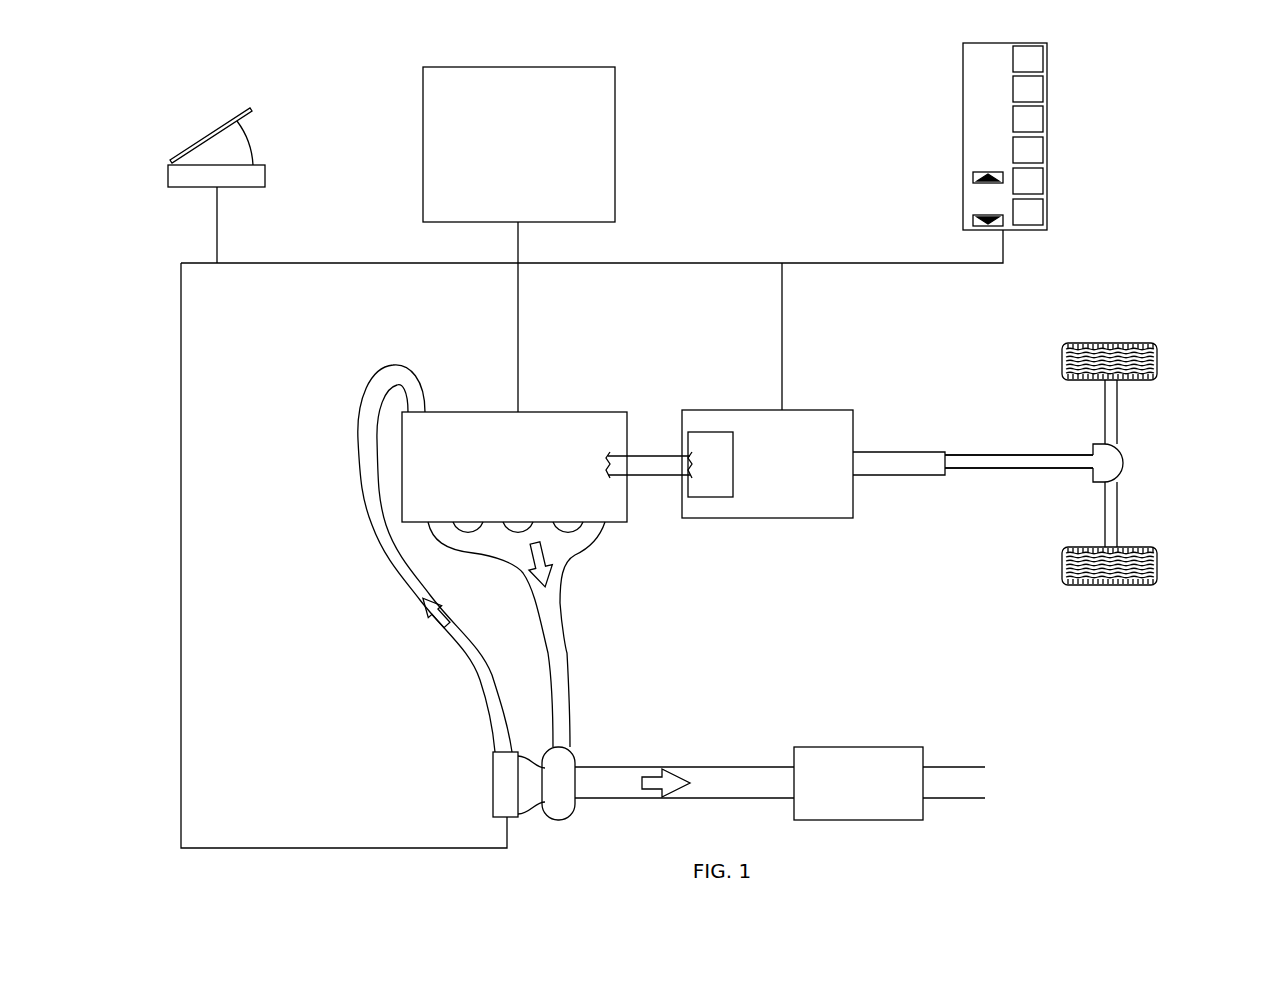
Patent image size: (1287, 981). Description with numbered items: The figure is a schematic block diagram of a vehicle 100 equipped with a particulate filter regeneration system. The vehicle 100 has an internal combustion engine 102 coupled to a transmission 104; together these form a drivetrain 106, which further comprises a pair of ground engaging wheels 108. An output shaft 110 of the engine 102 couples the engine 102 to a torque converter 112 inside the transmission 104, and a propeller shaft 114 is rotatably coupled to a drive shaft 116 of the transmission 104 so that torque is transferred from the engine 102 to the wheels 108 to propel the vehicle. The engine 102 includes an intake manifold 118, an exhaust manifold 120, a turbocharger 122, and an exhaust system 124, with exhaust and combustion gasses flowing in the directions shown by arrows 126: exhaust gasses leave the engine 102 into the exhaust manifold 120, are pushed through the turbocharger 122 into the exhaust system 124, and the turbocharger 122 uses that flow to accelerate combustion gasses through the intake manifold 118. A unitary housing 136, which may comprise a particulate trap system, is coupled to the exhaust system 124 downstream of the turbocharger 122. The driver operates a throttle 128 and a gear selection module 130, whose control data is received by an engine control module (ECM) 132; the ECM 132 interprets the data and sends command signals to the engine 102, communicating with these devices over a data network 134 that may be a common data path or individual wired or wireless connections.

The vehicle 100 is at (1190, 128).
The internal combustion engine 102 is at (497, 473).
The transmission 104 is at (762, 473).
The drivetrain 106 is at (809, 590).
The wheels 108 is at (1145, 376).
The output shaft 110 is at (652, 450).
The torque converter 112 is at (688, 490).
The propeller shaft 114 is at (1118, 432).
The drive shaft 116 is at (1064, 455).
The intake manifold 118 is at (428, 408).
The exhaust manifold 120 is at (572, 558).
The turbocharger 122 is at (576, 763).
The exhaust system 124 is at (687, 767).
The arrows 126 is at (656, 796).
The throttle 128 is at (265, 176).
The gear selection module 130 is at (1047, 160).
The engine control module (ECM) 132 is at (500, 167).
The data network 134 is at (328, 263).
The unitary housing 136 is at (840, 796).